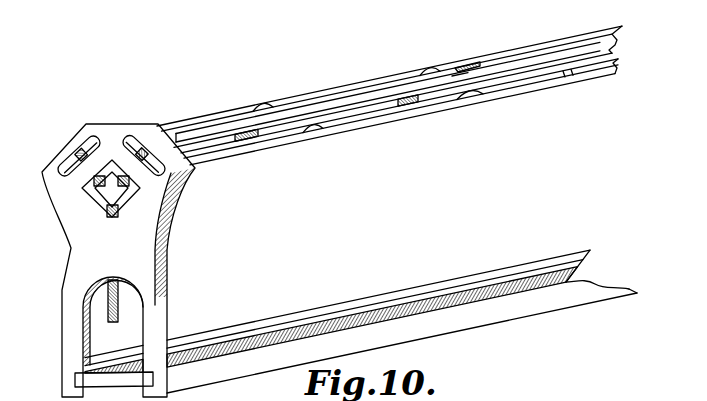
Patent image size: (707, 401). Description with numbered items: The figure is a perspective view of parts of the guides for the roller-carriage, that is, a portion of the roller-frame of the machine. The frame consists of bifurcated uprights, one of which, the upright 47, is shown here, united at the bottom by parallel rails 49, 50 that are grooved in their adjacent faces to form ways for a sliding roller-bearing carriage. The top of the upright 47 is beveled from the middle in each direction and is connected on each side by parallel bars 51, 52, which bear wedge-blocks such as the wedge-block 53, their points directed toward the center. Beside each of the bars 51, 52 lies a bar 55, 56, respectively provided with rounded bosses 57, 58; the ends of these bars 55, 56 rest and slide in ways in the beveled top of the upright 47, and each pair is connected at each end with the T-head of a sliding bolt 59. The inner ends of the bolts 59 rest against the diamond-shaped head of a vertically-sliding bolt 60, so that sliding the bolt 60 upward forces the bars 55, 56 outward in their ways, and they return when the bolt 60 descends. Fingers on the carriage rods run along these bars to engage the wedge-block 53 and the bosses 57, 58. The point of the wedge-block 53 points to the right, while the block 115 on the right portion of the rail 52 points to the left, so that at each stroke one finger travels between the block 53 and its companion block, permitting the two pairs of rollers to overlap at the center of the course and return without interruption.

The bifurcated upright 47 is at (118, 260).
The parallel rail 49 is at (448, 333).
The parallel rail 50 is at (245, 323).
The parallel bar 51 is at (459, 82).
The parallel bar 52 is at (248, 135).
The wedge-block 53 is at (462, 67).
The bar 55 is at (311, 93).
The bar 56 is at (388, 124).
The rounded boss 57 is at (262, 103).
The rounded boss 58 is at (321, 131).
The sliding bolt 59 is at (74, 172).
The vertically-sliding bolt 60 is at (120, 206).
The block 115 is at (567, 72).